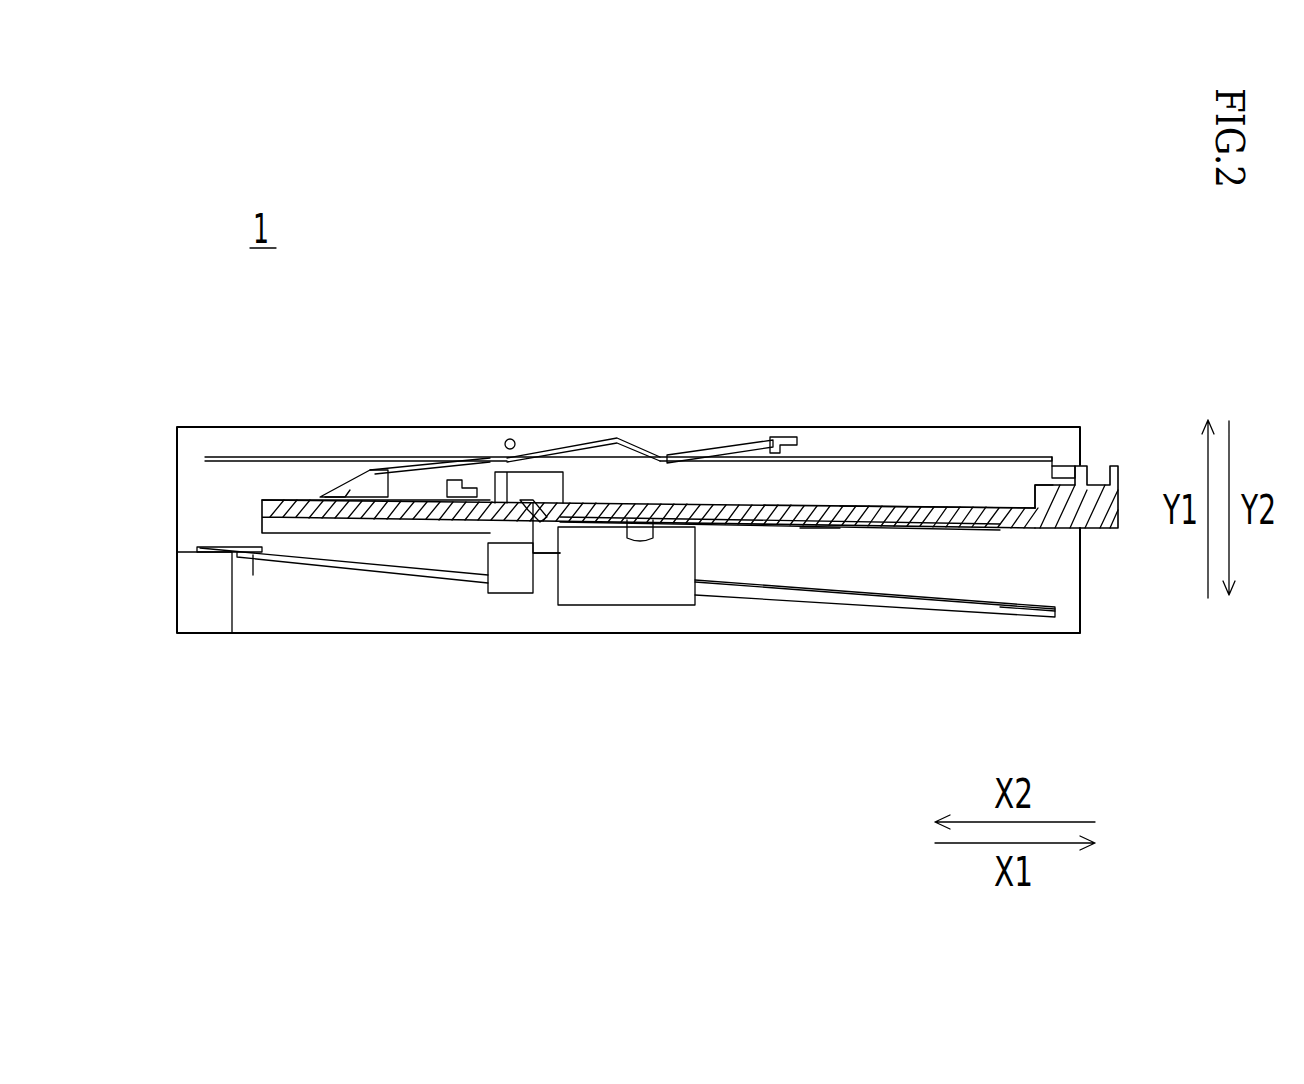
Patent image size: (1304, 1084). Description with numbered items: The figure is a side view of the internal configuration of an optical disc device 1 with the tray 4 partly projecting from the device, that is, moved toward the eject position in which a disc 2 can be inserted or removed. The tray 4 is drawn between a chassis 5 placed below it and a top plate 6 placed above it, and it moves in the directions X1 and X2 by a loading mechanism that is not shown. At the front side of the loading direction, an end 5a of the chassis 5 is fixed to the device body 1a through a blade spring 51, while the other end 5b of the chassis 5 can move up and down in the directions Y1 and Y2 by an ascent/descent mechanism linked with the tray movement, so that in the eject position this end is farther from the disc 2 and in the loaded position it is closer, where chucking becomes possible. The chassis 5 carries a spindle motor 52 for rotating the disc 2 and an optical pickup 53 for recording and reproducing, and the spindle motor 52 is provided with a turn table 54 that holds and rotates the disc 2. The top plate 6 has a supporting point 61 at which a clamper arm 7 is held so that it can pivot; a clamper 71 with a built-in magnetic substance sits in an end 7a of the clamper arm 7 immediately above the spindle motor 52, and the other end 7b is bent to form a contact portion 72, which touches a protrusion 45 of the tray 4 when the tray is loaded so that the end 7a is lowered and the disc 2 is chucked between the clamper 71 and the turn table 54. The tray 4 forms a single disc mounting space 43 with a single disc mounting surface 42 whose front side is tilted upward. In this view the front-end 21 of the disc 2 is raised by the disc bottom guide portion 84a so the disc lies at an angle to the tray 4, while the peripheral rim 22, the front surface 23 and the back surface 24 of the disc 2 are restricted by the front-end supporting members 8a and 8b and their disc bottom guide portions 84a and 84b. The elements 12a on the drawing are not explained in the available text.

The optical disc device 1 is at (628, 530).
The device body 1a is at (208, 618).
The disc 2 is at (815, 500).
The tray 4 is at (1092, 535).
The chassis 5 is at (945, 612).
The end of the chassis 5a is at (260, 575).
The other end of the chassis 5b is at (1033, 617).
The top plate 6 is at (875, 457).
The clamper arm 7 is at (577, 448).
The end of the clamper arm 7a is at (770, 440).
The other end of the clamper arm 7b is at (338, 470).
The front-end supporting member 8a is at (460, 480).
The front-end supporting member 8b is at (529, 487).
The engagement lug 12a is at (1087, 470).
The front-end of the disc 21 is at (500, 560).
The peripheral rim of the disc 22 is at (1052, 500).
The front surface of the disc 23 is at (907, 502).
The back surface of the disc 24 is at (840, 522).
The single disc mounting surface 42 is at (1025, 528).
The single disc mounting space 43 is at (984, 497).
The protrusion 45 is at (386, 497).
The blade spring 51 is at (213, 548).
The spindle motor 52 is at (728, 590).
The optical pickup 53 is at (630, 600).
The turn table 54 is at (805, 532).
The supporting point 61 is at (512, 448).
The clamper 71 is at (708, 450).
The contact portion 72 is at (325, 497).
The disc bottom guide portion 84a is at (528, 525).
The disc bottom guide portion 84b is at (546, 528).